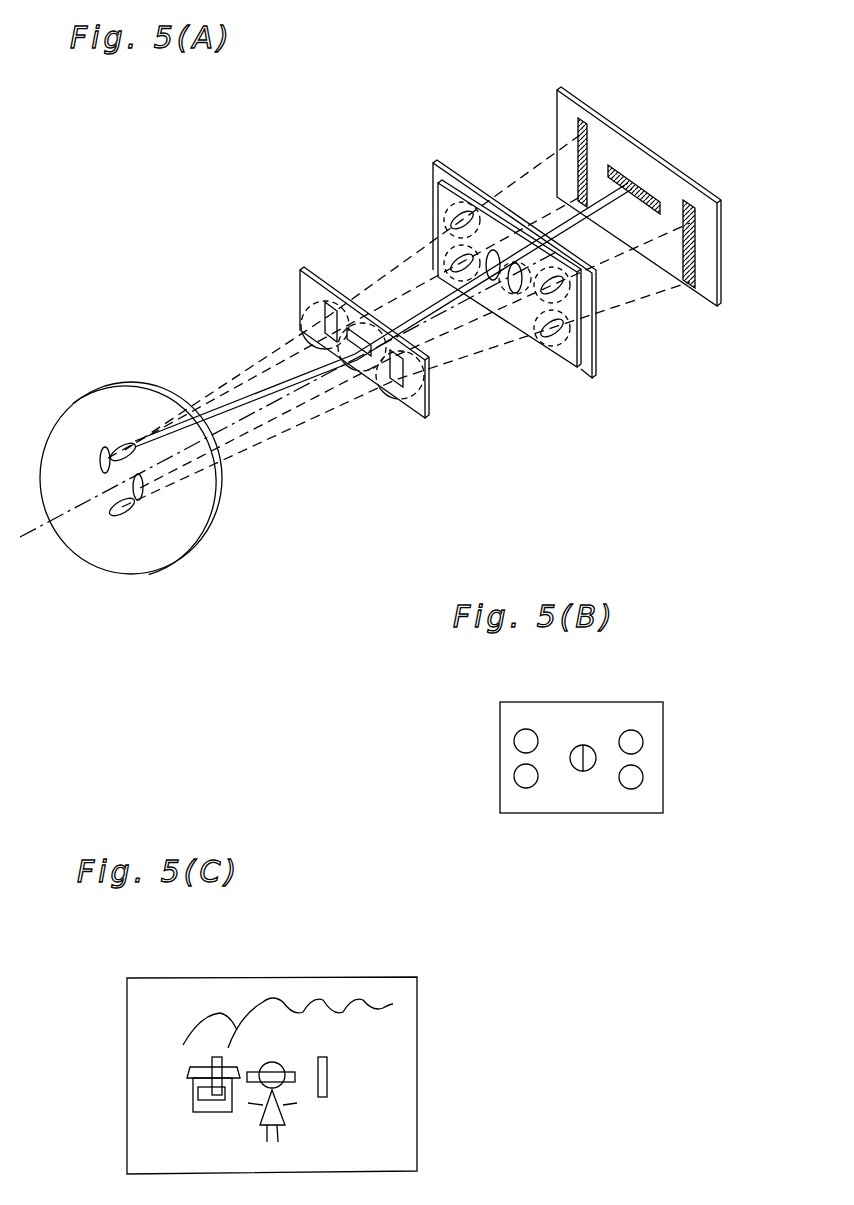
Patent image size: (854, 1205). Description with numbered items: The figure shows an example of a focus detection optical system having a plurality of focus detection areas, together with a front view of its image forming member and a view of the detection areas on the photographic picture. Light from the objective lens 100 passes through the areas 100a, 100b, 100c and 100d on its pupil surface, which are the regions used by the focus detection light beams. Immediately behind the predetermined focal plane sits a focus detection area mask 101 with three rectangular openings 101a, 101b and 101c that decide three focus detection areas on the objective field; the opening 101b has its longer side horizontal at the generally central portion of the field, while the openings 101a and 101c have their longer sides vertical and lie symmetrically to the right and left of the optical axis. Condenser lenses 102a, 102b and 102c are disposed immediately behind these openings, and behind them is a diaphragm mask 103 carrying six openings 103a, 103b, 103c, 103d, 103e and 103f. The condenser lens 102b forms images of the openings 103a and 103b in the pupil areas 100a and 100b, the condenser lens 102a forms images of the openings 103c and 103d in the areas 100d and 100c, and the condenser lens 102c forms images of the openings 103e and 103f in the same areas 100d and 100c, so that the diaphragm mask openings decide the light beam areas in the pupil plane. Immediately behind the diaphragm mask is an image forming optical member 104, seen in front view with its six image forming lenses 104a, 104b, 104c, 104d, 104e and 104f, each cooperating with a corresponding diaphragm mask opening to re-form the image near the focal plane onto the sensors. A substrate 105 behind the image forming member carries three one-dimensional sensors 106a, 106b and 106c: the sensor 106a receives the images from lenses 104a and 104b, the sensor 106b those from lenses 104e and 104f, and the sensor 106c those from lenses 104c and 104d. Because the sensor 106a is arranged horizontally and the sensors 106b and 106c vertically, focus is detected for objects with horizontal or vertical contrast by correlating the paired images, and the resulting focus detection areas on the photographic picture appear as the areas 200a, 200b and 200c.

In FIG. 5A, the objective lens 100 is at (146, 579).
In FIG. 5A, the pupil area pattern 100a is at (143, 495).
In FIG. 5A, the pupil area pattern 100b is at (102, 453).
In FIG. 5A, the pupil area pattern 100c is at (118, 447).
In FIG. 5A, the pupil area pattern 100d is at (112, 505).
In FIG. 5A, the focus detection area mask 101 is at (407, 427).
In FIG. 5A, the rectangular opening 101a is at (325, 312).
In FIG. 5A, the rectangular opening 101b is at (360, 349).
In FIG. 5A, the rectangular opening 101c is at (405, 386).
In FIG. 5A, the condenser lens 102a is at (338, 302).
In FIG. 5A, the condenser lens 102b is at (377, 322).
In FIG. 5A, the condenser lens 102c is at (427, 343).
In FIG. 5A, the diaphragm mask 103 is at (567, 366).
In FIG. 5A, the diaphragm mask opening 103a is at (490, 250).
In FIG. 5A, the diaphragm mask opening 103b is at (515, 262).
In FIG. 5A, the diaphragm mask opening 103c is at (455, 208).
In FIG. 5A, the diaphragm mask opening 103d is at (455, 252).
In FIG. 5A, the diaphragm mask opening 103e is at (556, 289).
In FIG. 5A, the diaphragm mask opening 103f is at (556, 332).
In FIG. 5A, the image forming optical member 104 is at (604, 361).
In FIG. 5B, the image forming optical member 104 is at (536, 822).
In FIG. 5B, the image forming lens 104a is at (572, 772).
In FIG. 5B, the image forming lens 104b is at (598, 772).
In FIG. 5B, the image forming lens 104c is at (515, 738).
In FIG. 5B, the image forming lens 104d is at (514, 776).
In FIG. 5B, the image forming lens 104e is at (643, 741).
In FIG. 5B, the image forming lens 104f is at (643, 777).
In FIG. 5A, the substrate 105 is at (678, 158).
In FIG. 5A, the one-dimensional sensor 106a is at (626, 176).
In FIG. 5A, the one-dimensional sensor 106b is at (696, 243).
In FIG. 5A, the one-dimensional sensor 106c is at (576, 126).
In FIG. 5C, the focus detection area 200a is at (262, 1062).
In FIG. 5C, the focus detection area 200b is at (328, 1070).
In FIG. 5C, the focus detection area 200c is at (212, 1062).